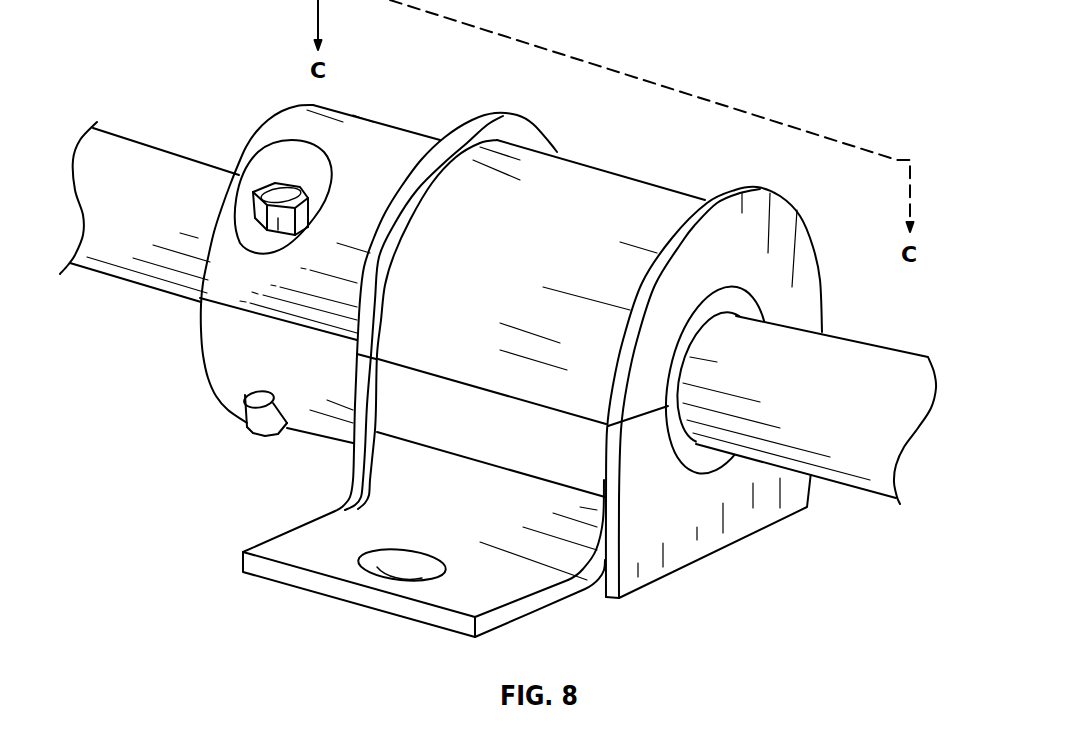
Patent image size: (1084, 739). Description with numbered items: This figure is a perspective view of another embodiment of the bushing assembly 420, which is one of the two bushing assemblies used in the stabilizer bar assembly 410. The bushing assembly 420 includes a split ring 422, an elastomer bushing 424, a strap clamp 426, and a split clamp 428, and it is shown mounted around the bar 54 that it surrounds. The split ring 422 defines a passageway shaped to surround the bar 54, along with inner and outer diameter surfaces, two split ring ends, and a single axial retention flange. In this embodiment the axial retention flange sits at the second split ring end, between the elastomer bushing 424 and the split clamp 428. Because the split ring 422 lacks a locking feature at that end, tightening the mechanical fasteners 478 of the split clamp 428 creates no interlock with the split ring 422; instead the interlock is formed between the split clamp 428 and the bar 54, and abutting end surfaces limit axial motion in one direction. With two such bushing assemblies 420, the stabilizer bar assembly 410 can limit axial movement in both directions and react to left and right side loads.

The shaft 54 is at (858, 416).
The stabilizer bar assembly 410 is at (859, 66).
The bushing assembly 420 is at (853, 127).
The split ring 422 is at (697, 481).
The elastomer bushing 424 is at (780, 530).
The strap clamp 426 is at (280, 592).
The split clamp 428 is at (203, 385).
The mechanical fasteners 478 is at (277, 242).